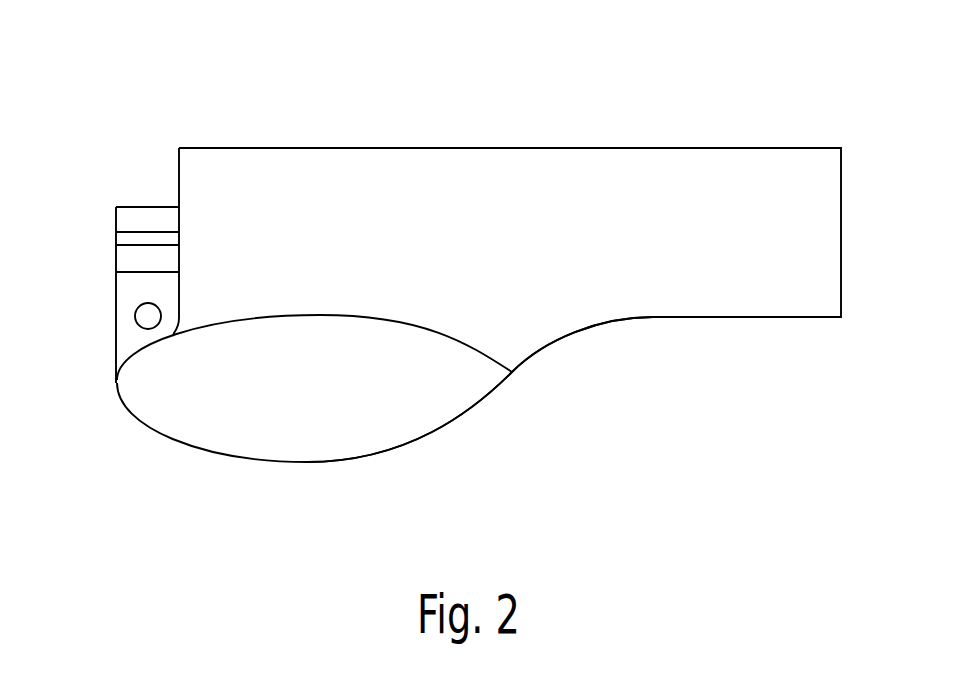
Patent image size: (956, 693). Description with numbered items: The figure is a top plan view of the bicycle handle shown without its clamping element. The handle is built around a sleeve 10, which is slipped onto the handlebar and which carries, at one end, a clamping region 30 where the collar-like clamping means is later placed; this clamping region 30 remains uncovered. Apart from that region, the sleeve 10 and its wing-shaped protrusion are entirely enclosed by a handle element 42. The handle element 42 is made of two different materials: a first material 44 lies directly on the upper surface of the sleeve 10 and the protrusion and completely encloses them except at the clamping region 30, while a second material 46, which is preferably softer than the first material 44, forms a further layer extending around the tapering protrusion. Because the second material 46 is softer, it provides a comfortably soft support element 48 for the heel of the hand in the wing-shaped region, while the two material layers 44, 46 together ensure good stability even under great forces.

The sleeve 10 is at (132, 292).
The clamping region 30 is at (105, 214).
The handle element 42 is at (595, 121).
The first material 44 is at (452, 162).
The second material 46 is at (228, 440).
The support element 48 is at (476, 436).